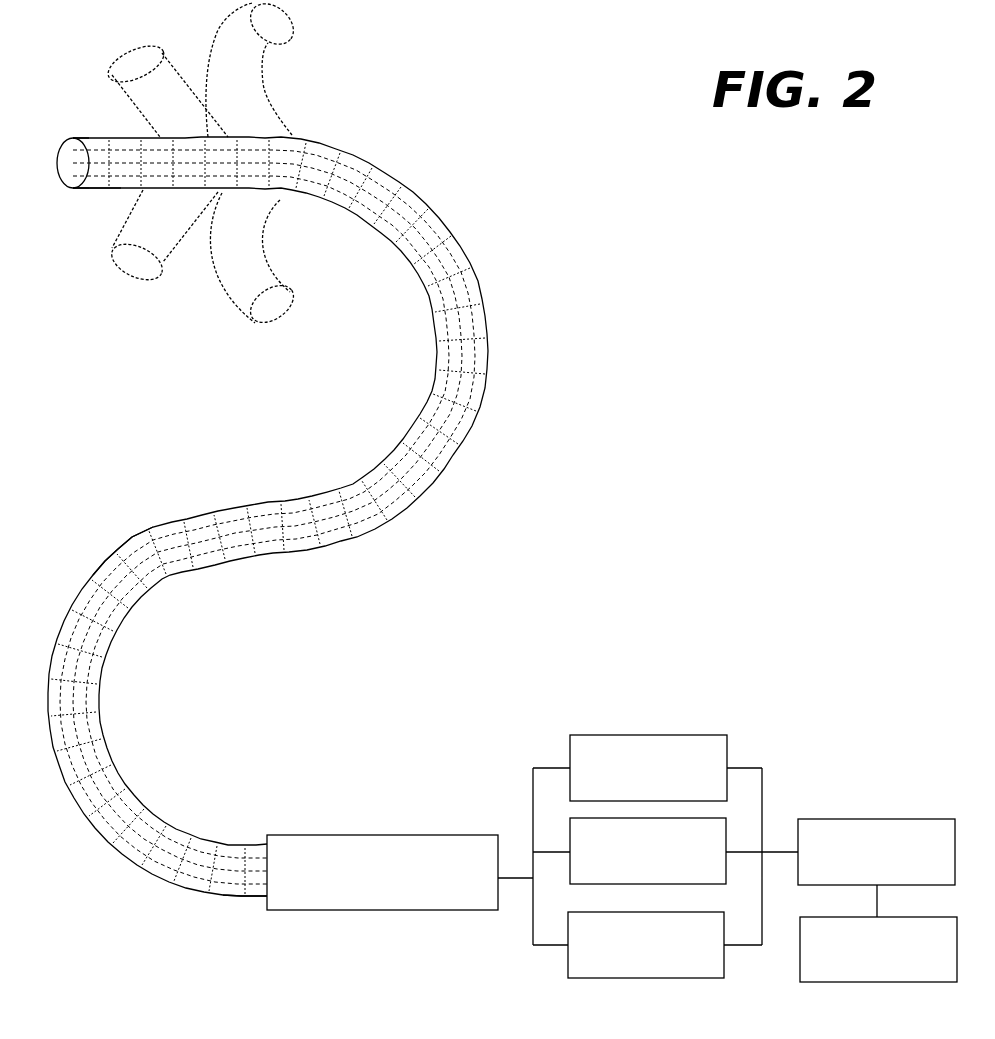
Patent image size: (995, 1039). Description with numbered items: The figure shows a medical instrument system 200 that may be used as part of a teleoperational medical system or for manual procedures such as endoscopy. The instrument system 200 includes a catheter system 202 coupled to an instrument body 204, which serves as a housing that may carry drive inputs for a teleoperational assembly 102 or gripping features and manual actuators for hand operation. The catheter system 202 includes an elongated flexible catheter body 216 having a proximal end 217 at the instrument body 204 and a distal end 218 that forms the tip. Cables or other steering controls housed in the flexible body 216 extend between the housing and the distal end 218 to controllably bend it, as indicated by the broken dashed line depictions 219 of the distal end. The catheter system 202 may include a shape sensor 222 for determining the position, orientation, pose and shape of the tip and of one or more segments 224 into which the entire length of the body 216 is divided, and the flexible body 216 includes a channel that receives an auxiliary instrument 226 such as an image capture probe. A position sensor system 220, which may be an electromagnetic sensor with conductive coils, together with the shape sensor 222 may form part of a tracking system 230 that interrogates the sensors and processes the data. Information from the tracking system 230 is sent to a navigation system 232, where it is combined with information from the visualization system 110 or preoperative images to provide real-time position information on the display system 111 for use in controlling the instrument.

The medical instrument system 200 is at (488, 128).
The catheter system 202 is at (477, 270).
The instrument body 204 is at (367, 883).
The flexible catheter body 216 is at (214, 507).
The proximal end 217 is at (243, 911).
The distal end 218 is at (82, 130).
The broken dashed line depictions of the distal end 219 is at (133, 47).
The position sensor system 220 is at (107, 192).
The shape sensor 222 is at (492, 333).
The segments 224 is at (454, 458).
The auxiliary instrument 226 is at (432, 352).
The teleoperational assembly 102 is at (648, 768).
The visualization system 110 is at (648, 851).
The tracking system 230 is at (646, 945).
The navigation system 232 is at (876, 852).
The display system 111 is at (878, 949).